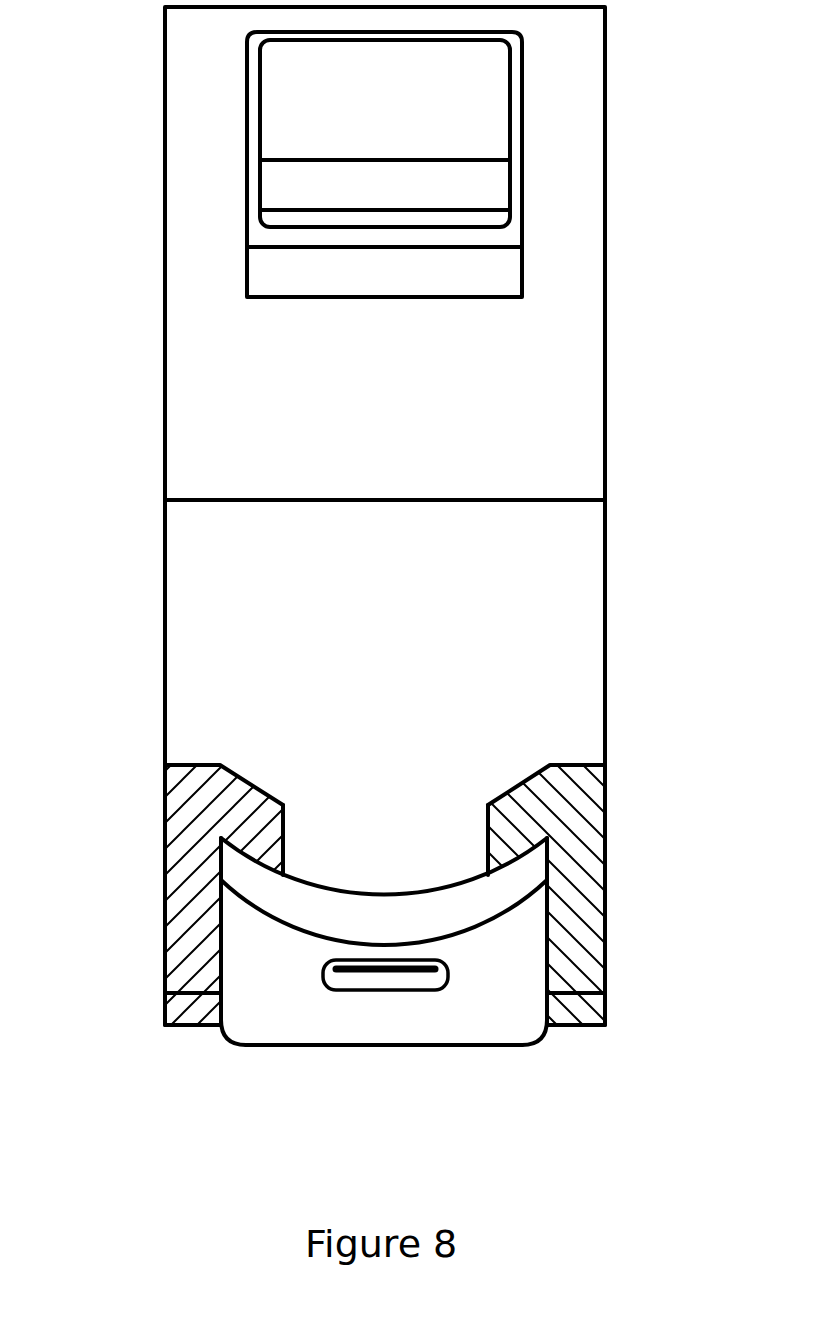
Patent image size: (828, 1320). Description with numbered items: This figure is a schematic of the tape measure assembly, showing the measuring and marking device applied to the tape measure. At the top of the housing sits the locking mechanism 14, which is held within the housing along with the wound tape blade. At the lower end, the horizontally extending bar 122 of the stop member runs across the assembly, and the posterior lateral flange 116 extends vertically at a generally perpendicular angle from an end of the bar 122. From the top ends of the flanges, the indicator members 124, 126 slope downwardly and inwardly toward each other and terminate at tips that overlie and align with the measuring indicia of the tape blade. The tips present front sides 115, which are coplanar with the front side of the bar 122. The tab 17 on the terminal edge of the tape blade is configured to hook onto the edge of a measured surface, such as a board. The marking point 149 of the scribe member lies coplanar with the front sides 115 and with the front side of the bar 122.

The locking mechanism 14 is at (300, 99).
The posterior lateral flange 116 is at (588, 878).
The indicator member 124 is at (172, 795).
The indicator member 126 is at (563, 802).
The front side 115 is at (283, 868).
The tab 17 is at (260, 992).
The horizontally extending bar 122 is at (215, 1028).
The marking point 149 is at (383, 1047).